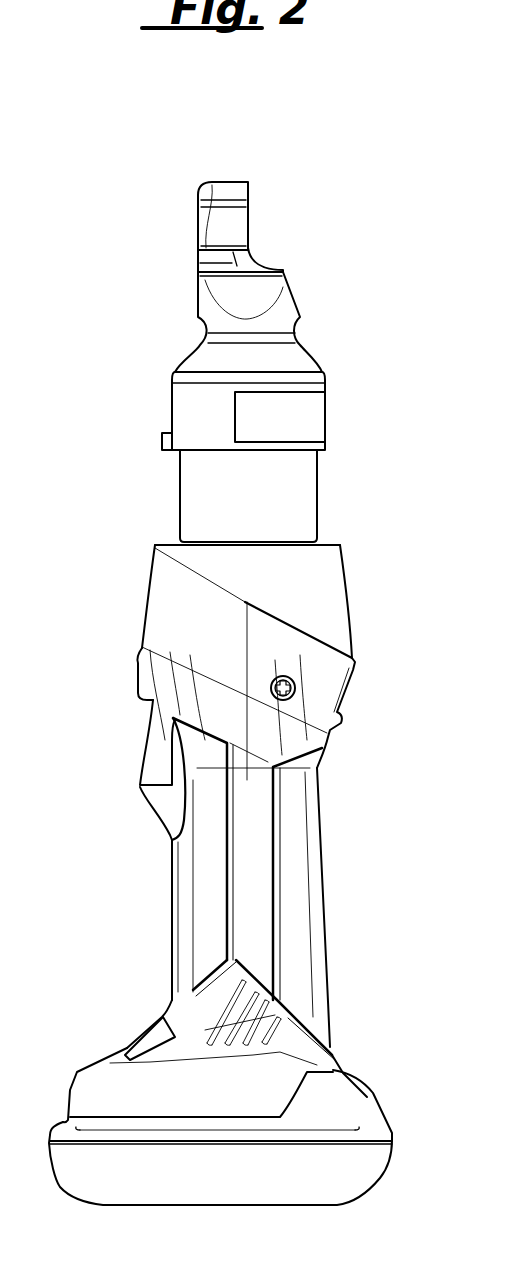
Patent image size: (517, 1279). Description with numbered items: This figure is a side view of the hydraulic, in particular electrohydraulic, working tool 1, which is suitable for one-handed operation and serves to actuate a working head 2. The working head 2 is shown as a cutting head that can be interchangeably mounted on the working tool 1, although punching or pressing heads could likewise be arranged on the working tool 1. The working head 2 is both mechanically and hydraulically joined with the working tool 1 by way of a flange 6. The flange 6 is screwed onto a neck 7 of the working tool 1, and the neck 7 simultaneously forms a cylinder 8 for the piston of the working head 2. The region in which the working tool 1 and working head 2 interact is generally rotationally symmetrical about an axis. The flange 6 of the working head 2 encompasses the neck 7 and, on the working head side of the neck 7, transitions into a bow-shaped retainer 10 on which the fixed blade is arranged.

The working tool 1 is at (105, 593).
The working head 2 is at (135, 228).
The flange 6 is at (297, 410).
The neck 7 is at (280, 478).
The cylinder 8 is at (283, 507).
The retainer 10 is at (238, 283).